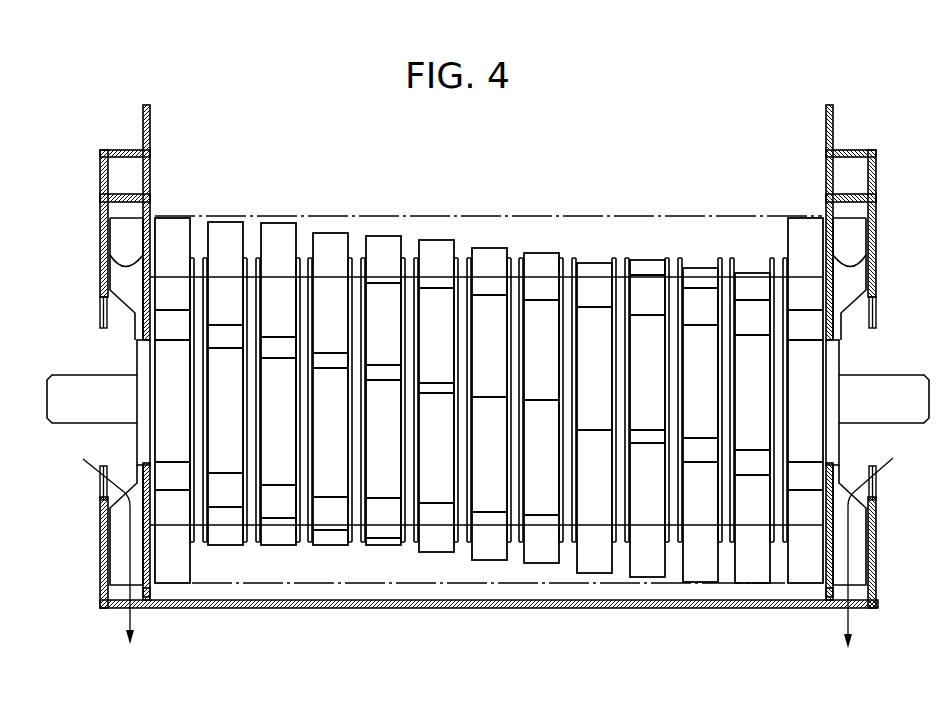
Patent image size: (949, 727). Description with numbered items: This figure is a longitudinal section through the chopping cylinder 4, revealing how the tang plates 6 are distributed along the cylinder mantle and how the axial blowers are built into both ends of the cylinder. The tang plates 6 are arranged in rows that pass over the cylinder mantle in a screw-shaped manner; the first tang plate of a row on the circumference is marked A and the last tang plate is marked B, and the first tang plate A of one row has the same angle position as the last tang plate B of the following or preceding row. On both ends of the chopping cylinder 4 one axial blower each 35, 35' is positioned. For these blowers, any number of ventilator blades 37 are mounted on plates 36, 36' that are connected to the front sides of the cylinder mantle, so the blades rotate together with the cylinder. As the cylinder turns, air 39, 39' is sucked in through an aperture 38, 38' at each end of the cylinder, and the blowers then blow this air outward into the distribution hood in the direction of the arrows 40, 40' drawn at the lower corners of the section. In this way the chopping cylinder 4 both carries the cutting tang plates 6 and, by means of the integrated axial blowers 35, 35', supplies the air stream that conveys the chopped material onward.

The chopping cylinder 4 is at (592, 317).
The tang plates 6 is at (322, 258).
The first tang plate marking A is at (175, 232).
The last tang plate marking B is at (802, 283).
The axial blower 35 is at (97, 399).
The axial blower 35' is at (882, 399).
The plate 36 is at (99, 258).
The plate 36' is at (877, 257).
The ventilator blades 37 is at (118, 228).
The aperture 38 is at (87, 309).
The aperture 38' is at (888, 309).
The air 39 is at (77, 479).
The air 39' is at (903, 479).
The arrow 40 is at (112, 566).
The arrow 40' is at (864, 566).